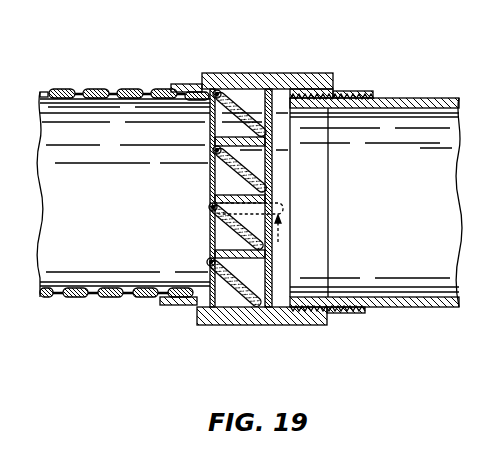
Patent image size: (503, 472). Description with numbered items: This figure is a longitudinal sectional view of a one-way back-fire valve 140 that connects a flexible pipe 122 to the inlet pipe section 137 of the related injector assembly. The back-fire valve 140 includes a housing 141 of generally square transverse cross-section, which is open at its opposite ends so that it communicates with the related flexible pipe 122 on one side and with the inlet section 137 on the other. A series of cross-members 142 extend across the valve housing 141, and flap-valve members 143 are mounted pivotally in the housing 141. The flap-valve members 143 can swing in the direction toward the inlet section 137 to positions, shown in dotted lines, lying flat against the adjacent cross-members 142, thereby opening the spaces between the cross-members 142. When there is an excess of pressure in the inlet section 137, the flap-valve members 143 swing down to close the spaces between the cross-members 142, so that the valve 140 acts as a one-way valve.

The flexible pipe 122 is at (97, 89).
The inlet pipe section 137 is at (421, 98).
The back-fire valve 140 is at (252, 163).
The housing 141 is at (222, 73).
The cross-members 142 is at (266, 257).
The flap-valve members 143 is at (232, 167).